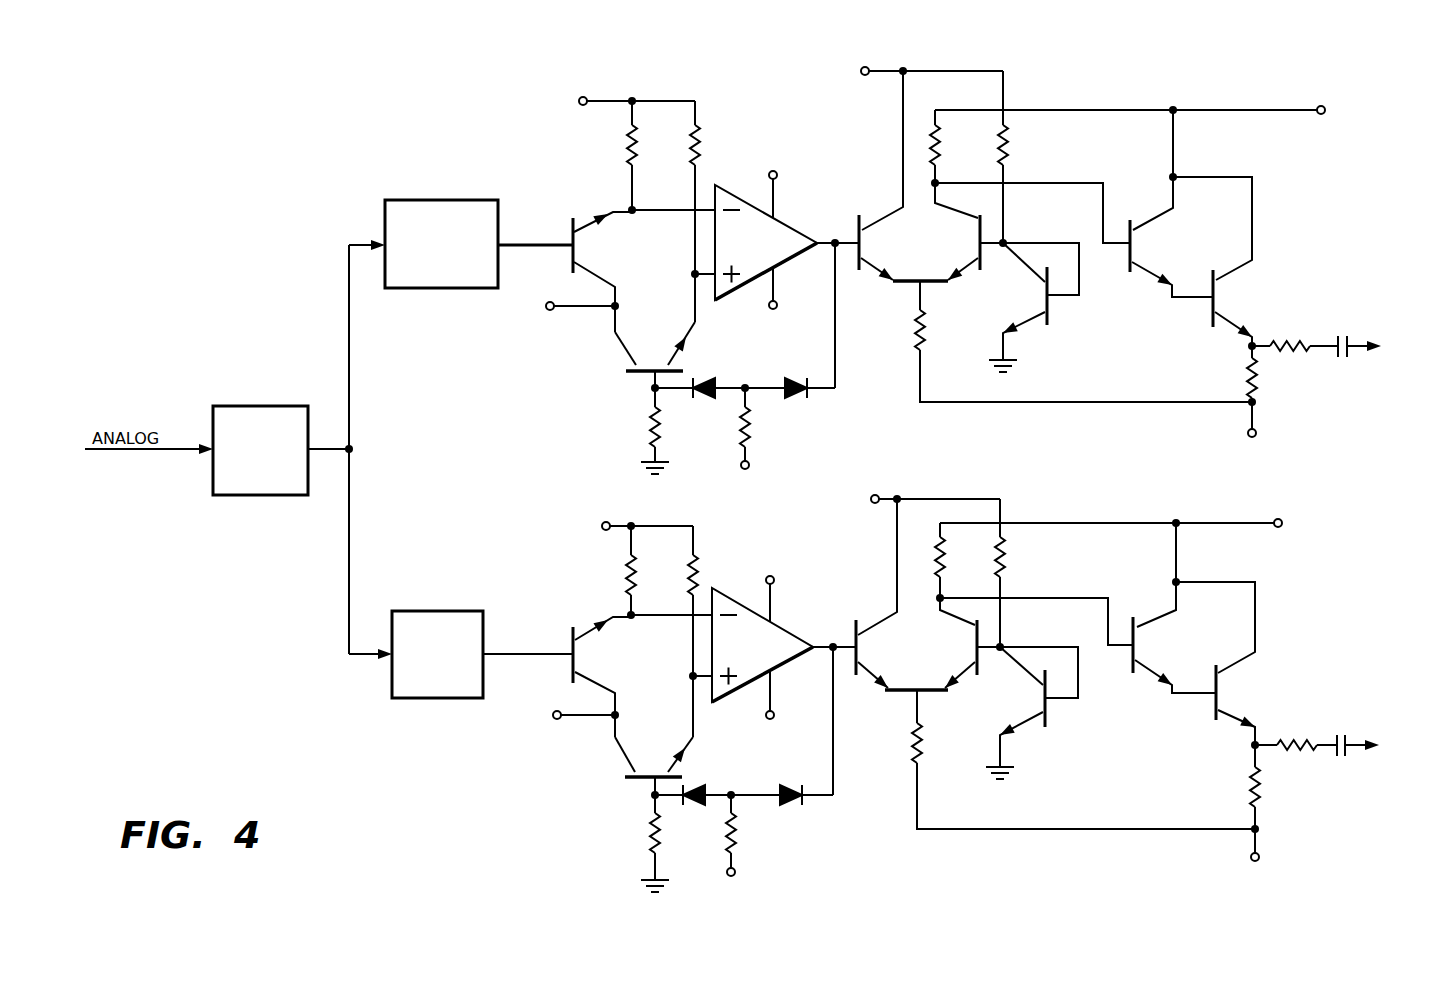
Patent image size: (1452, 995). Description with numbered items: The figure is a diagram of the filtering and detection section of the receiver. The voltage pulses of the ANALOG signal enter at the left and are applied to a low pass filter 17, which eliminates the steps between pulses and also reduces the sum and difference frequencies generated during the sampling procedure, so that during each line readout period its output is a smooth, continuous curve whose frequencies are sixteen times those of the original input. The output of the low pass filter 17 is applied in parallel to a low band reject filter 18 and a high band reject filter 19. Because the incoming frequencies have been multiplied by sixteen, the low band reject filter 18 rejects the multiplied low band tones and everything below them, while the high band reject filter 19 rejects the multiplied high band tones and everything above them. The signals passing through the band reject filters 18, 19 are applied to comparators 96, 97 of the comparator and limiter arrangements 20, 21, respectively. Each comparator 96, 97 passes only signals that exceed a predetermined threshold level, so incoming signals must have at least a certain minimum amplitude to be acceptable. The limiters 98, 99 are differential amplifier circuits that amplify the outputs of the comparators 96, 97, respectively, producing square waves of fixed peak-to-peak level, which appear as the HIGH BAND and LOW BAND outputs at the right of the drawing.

The low pass filter 17 is at (270, 406).
The low band reject filter 18 is at (385, 206).
The high band reject filter 19 is at (437, 611).
The comparator and limiter arrangement 20 is at (767, 84).
The comparator and limiter arrangement 21 is at (862, 826).
The comparator 96 is at (797, 211).
The comparator 97 is at (797, 604).
The limiter 98 is at (1115, 91).
The limiter 99 is at (1094, 505).